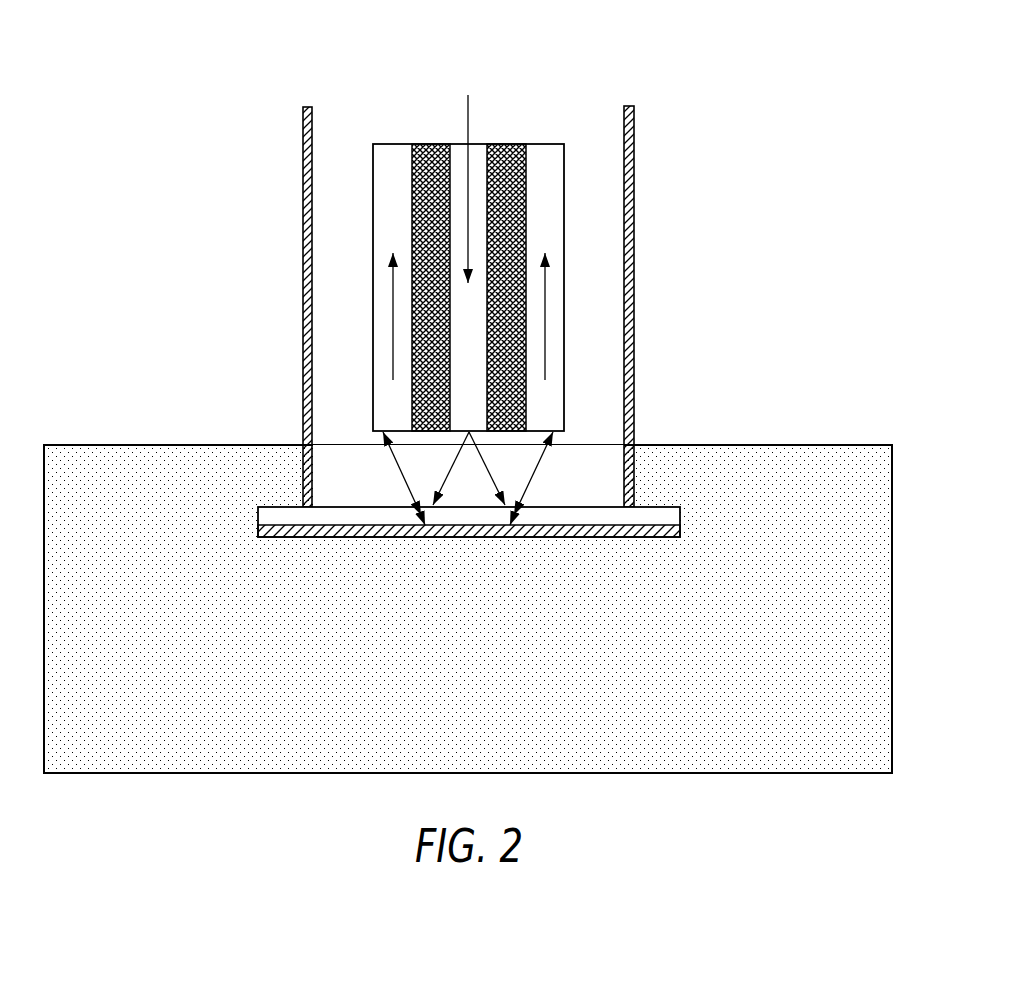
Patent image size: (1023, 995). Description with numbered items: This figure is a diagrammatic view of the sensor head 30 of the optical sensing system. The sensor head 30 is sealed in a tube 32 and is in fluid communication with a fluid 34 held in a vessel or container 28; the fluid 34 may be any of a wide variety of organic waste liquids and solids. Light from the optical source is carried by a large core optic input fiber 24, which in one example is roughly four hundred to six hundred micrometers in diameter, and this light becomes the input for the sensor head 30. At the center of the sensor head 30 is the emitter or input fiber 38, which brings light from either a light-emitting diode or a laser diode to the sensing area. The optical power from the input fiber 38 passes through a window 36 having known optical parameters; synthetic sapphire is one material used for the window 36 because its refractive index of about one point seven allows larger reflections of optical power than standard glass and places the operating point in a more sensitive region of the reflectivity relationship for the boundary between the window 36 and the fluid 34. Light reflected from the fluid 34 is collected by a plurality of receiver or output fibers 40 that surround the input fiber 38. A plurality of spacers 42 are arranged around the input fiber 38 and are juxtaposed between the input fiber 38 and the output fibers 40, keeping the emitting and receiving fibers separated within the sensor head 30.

The input fiber 24 is at (468, 403).
The vessel 28 is at (893, 725).
The sensor head 30 is at (641, 320).
The tube 32 is at (303, 217).
The fluid 34 is at (853, 602).
The window 36 is at (288, 513).
The input fiber 38 is at (475, 148).
The output fibers 40 is at (549, 284).
The spacers 42 is at (527, 218).